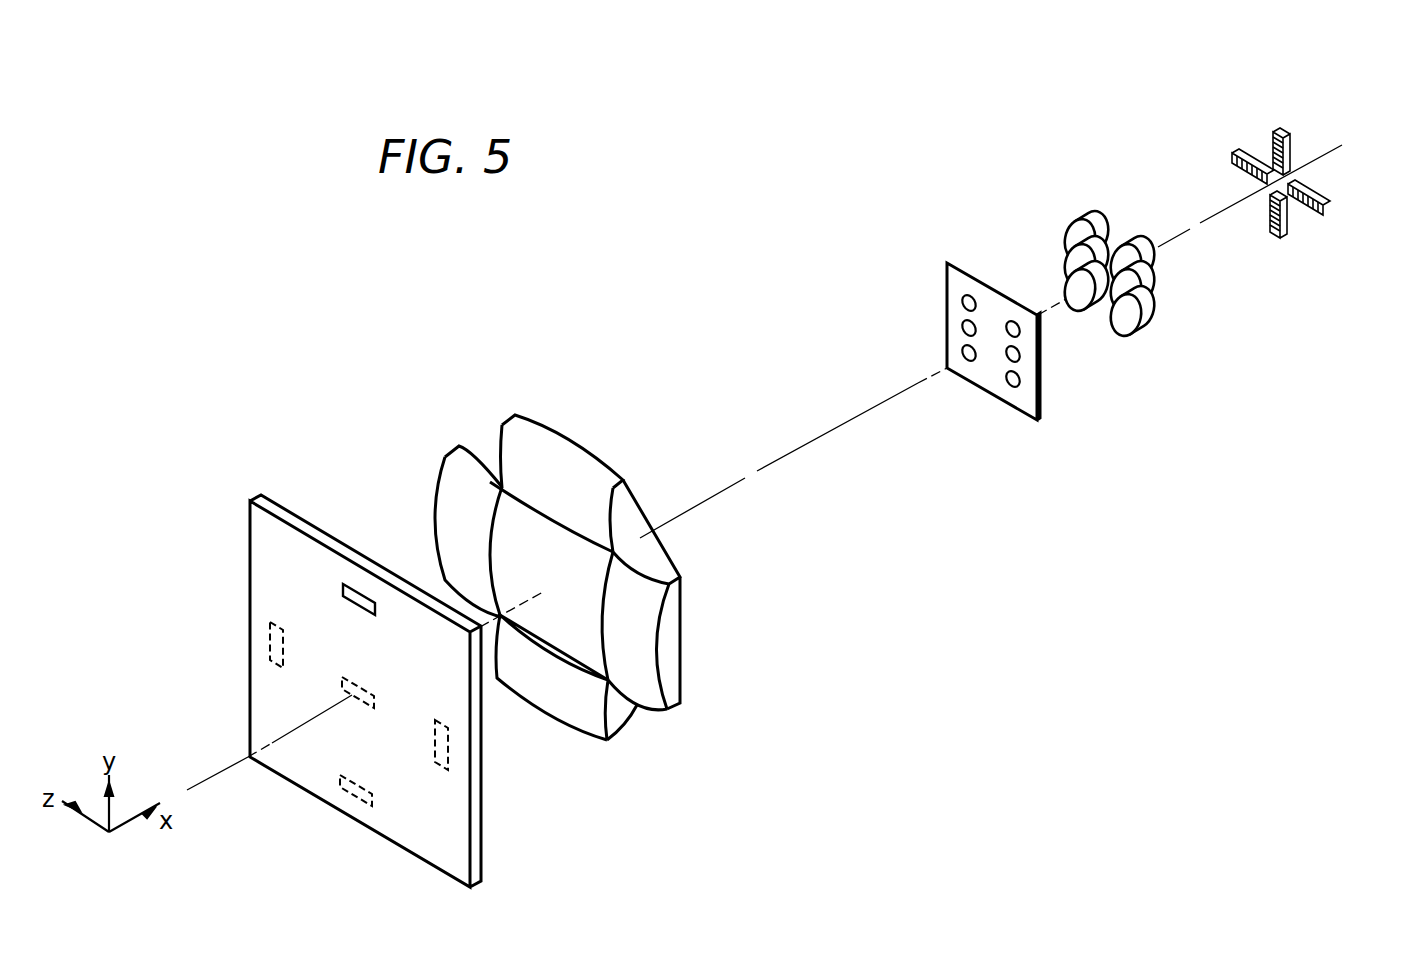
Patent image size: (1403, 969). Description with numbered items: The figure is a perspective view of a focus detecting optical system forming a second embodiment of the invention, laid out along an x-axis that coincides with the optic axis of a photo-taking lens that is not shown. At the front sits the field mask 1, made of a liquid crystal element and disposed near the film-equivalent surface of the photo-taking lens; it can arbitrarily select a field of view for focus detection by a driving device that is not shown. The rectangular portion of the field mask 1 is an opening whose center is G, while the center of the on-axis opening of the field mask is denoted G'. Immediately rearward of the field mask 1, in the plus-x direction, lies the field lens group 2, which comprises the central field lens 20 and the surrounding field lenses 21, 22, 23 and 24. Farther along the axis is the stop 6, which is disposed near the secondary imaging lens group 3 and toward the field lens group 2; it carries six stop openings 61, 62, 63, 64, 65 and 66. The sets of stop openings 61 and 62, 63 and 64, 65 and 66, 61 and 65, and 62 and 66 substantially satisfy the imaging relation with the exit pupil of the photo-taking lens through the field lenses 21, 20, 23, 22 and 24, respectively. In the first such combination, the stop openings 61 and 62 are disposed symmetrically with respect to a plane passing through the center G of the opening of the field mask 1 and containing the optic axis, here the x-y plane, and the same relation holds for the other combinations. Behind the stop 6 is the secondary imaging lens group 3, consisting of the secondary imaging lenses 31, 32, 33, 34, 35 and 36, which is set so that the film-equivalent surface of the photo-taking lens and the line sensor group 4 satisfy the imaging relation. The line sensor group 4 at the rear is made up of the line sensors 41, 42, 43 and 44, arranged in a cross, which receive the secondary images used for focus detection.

The field mask 1 is at (268, 496).
The center of the opening of the field mask G is at (359, 559).
The center of the on-axis opening of the field mask G' is at (403, 714).
The field lens group 2 is at (588, 572).
The field lens 20 is at (570, 603).
The field lens 21 is at (553, 455).
The field lens 22 is at (668, 637).
The field lens 23 is at (623, 713).
The field lens 24 is at (474, 462).
The stop 6 is at (957, 253).
The stop opening 61 is at (1017, 330).
The stop opening 62 is at (963, 298).
The stop opening 63 is at (1017, 355).
The stop opening 64 is at (963, 327).
The stop opening 65 is at (1017, 380).
The stop opening 66 is at (963, 353).
The secondary imaging lens group 3 is at (1114, 236).
The secondary imaging lens 31 is at (1153, 260).
The secondary imaging lens 32 is at (1073, 235).
The secondary imaging lens 33 is at (1153, 288).
The secondary imaging lens 34 is at (1073, 262).
The secondary imaging lens 35 is at (1153, 317).
The secondary imaging lens 36 is at (1077, 288).
The line sensor group 4 is at (1278, 171).
The line sensor 41 is at (1330, 208).
The line sensor 42 is at (1235, 153).
The line sensor 43 is at (1283, 130).
The line sensor 44 is at (1280, 237).